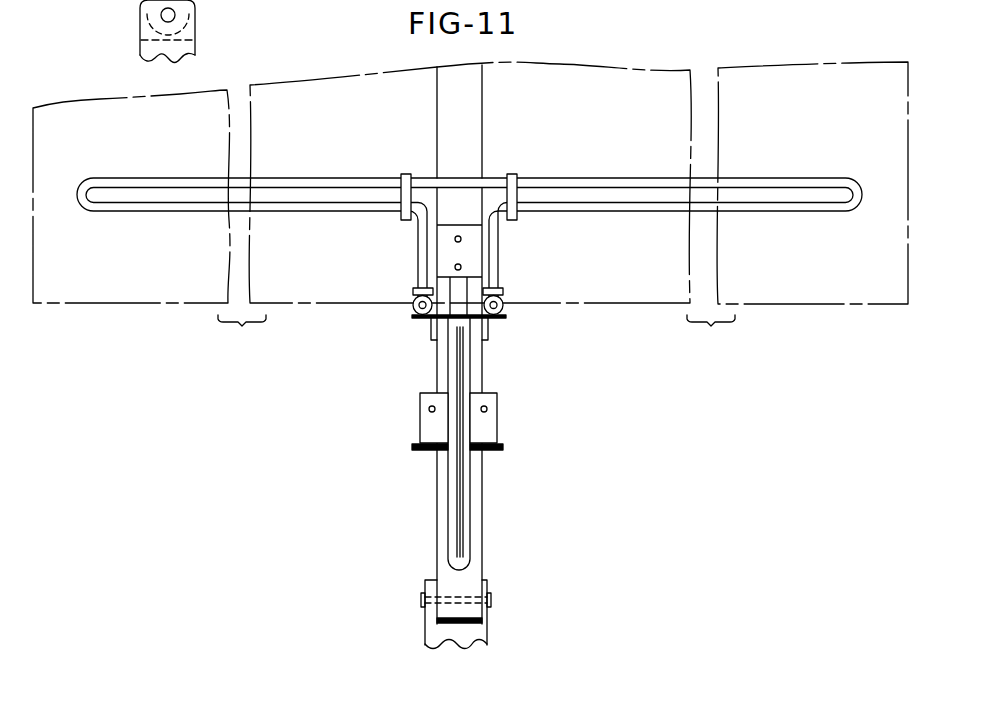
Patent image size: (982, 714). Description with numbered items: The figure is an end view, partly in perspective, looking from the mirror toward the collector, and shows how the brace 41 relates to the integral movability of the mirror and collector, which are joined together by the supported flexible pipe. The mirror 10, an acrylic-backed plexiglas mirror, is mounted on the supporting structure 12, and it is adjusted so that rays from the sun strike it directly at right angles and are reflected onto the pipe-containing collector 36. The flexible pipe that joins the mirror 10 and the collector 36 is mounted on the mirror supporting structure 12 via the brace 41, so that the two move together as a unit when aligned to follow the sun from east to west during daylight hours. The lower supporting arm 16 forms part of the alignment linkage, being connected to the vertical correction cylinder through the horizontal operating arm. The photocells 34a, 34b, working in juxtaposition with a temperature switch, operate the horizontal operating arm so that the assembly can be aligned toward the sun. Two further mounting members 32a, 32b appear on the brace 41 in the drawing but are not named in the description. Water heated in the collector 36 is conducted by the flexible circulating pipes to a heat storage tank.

The mirror 10 is at (743, 73).
The supporting structure 12 is at (482, 97).
The lower supporting arm 16 is at (195, 46).
The mounting bracket 32a is at (429, 409).
The mounting bracket 32b is at (487, 409).
The photocell 34a is at (461, 239).
The photocell 34b is at (461, 267).
The pipe-containing collector 36 is at (610, 181).
The brace 41 is at (470, 365).